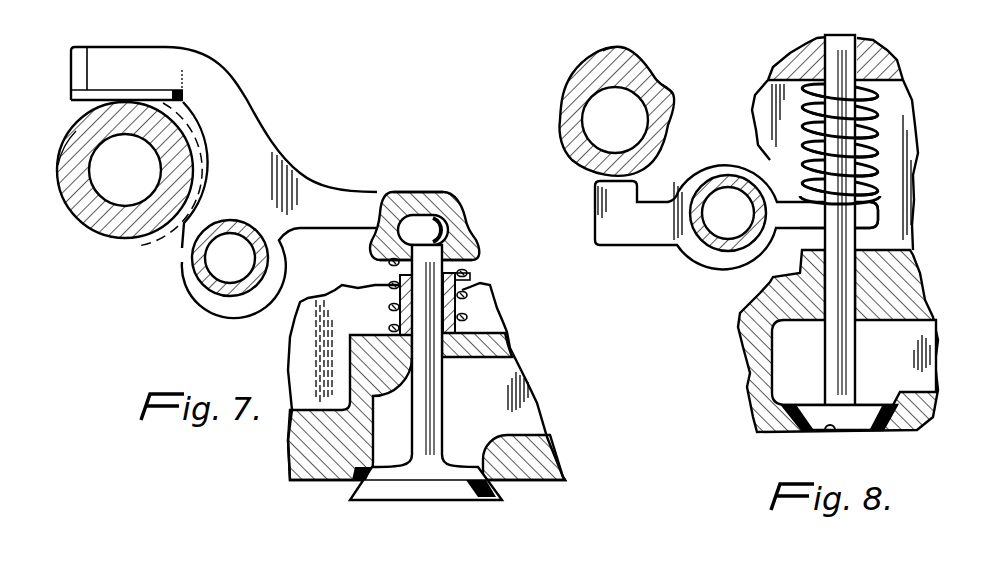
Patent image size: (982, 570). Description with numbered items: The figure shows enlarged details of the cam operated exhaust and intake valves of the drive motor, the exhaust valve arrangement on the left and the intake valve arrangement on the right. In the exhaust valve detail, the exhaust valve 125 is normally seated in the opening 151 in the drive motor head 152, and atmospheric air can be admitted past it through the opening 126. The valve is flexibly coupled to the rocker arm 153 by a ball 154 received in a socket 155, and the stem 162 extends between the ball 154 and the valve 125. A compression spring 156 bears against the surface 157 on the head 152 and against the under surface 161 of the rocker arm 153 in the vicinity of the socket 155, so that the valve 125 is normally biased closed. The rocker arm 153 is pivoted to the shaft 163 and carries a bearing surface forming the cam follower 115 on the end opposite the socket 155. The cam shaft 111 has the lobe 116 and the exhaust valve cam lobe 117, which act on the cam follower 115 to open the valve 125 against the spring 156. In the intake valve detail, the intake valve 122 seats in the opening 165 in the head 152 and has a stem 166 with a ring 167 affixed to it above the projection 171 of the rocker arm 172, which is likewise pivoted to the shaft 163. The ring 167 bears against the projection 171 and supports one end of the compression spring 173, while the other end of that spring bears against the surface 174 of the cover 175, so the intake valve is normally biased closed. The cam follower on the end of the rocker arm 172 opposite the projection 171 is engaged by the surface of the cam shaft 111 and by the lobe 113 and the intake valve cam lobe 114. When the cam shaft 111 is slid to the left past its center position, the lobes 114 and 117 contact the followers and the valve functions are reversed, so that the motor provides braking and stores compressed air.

In FIG. 7, the cam shaft 111 is at (108, 222).
In FIG. 8, the cam shaft 111 is at (580, 98).
In FIG. 8, the lobe 113 is at (625, 55).
In FIG. 8, the intake valve cam lobe 114 is at (668, 82).
In FIG. 7, the cam follower 115 is at (80, 92).
In FIG. 7, the lobe 116 is at (58, 163).
In FIG. 7, the exhaust valve cam lobe 117 is at (162, 238).
In FIG. 8, the intake valve 122 is at (830, 432).
In FIG. 7, the exhaust valve 125 is at (503, 494).
In FIG. 7, the opening 126 is at (515, 420).
In FIG. 7, the opening 151 is at (375, 472).
In FIG. 7, the drive motor head 152 is at (290, 378).
In FIG. 8, the drive motor head 152 is at (787, 413).
In FIG. 7, the rocker arm 153 is at (262, 162).
In FIG. 7, the ball 154 is at (437, 215).
In FIG. 7, the socket 155 is at (391, 192).
In FIG. 7, the compression spring 156 is at (467, 297).
In FIG. 7, the surface 157 is at (480, 332).
In FIG. 7, the under surface 161 is at (466, 263).
In FIG. 7, the stem 162 is at (423, 418).
In FIG. 7, the shaft 163 is at (223, 284).
In FIG. 8, the shaft 163 is at (710, 180).
In FIG. 8, the opening 165 is at (878, 405).
In FIG. 8, the stem 166 is at (833, 290).
In FIG. 8, the ring 167 is at (883, 180).
In FIG. 8, the projection 171 is at (845, 213).
In FIG. 8, the rocker arm 172 is at (655, 228).
In FIG. 8, the compression spring 173 is at (808, 127).
In FIG. 8, the surface 174 is at (863, 82).
In FIG. 8, the cover 175 is at (782, 82).